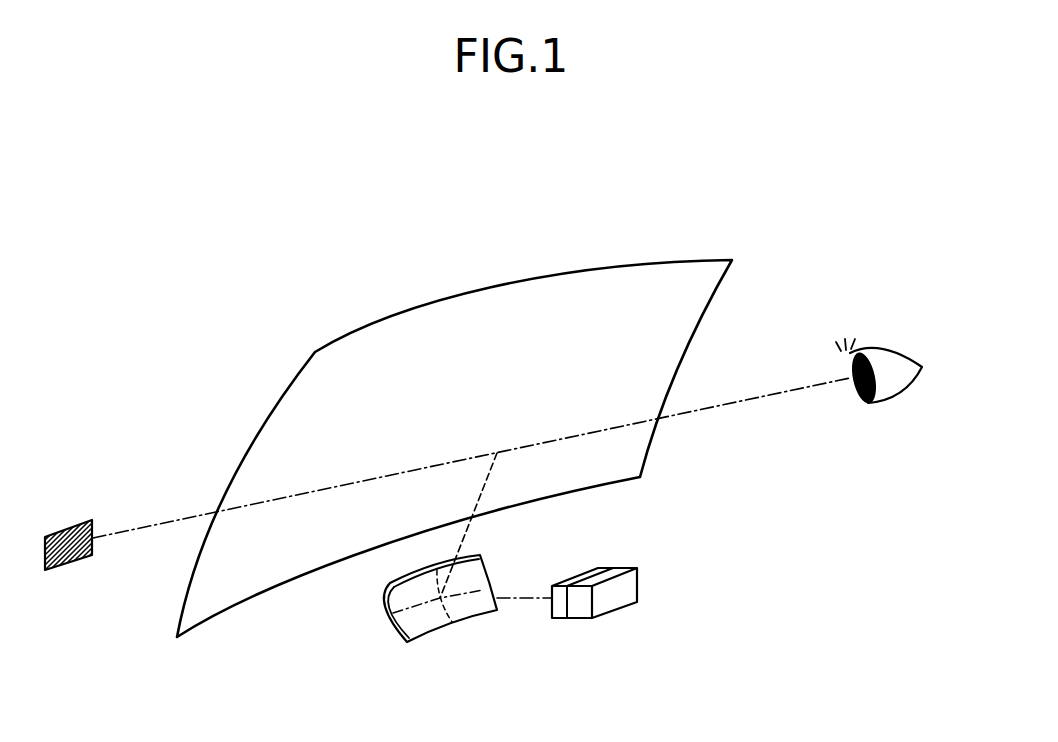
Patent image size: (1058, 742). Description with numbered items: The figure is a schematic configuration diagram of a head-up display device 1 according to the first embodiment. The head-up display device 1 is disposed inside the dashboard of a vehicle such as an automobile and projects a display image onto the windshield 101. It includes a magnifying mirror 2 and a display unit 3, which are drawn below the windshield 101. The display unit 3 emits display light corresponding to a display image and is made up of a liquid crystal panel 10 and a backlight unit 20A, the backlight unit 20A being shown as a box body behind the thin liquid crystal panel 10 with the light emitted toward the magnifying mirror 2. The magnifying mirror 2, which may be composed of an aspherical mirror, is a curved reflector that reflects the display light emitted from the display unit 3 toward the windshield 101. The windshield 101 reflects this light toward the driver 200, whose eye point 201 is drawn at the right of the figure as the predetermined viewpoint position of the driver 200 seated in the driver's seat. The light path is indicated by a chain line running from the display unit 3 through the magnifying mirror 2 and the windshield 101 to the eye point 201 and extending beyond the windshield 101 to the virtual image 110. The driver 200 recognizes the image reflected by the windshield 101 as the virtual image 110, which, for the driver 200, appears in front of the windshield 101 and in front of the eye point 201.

The head-up display device 1 is at (273, 205).
The windshield 101 is at (614, 255).
The virtual image 110 is at (80, 520).
The magnifying mirror 2 is at (393, 628).
The display unit 3 is at (648, 639).
The liquid crystal panel 10 is at (560, 608).
The backlight unit 20A is at (628, 587).
The driver 200 is at (858, 327).
The eye point 201 is at (852, 378).